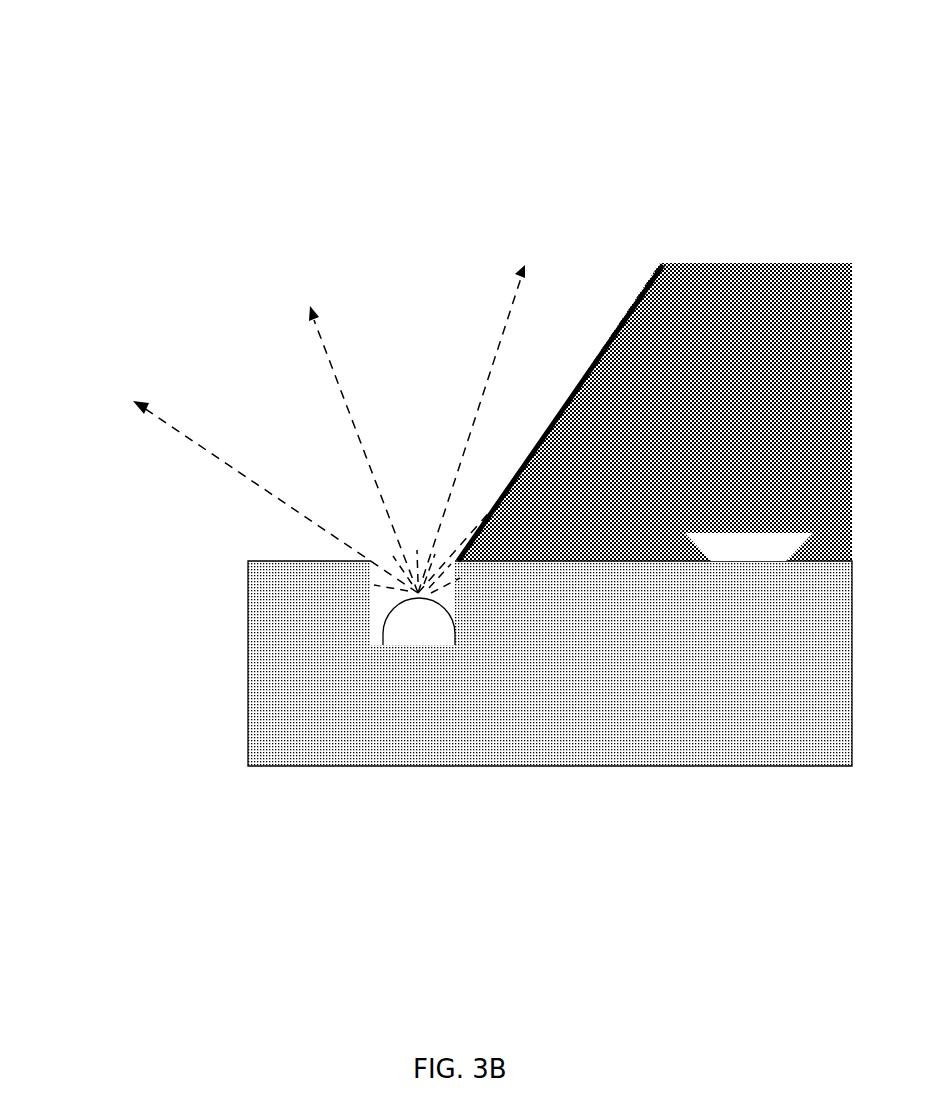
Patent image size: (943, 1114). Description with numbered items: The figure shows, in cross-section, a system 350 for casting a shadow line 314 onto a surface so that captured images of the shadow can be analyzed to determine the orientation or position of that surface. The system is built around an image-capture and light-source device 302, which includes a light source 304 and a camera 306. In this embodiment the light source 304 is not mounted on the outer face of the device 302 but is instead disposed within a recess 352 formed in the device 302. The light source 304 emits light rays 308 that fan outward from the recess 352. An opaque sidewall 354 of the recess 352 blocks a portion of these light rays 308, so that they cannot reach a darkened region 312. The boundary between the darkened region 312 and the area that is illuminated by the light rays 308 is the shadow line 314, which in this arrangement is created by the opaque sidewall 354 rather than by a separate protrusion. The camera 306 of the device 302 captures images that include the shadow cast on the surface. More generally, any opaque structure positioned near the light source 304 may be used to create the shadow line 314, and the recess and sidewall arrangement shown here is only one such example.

The system 350 is at (93, 118).
The image-capture and light-source device 302 is at (818, 758).
The light source 304 is at (410, 615).
The camera 306 is at (732, 543).
The light rays 308 is at (337, 392).
The darkened region 312 is at (797, 317).
The shadow line 314 is at (605, 332).
The recess 352 is at (375, 590).
The opaque sidewall 354 is at (448, 583).